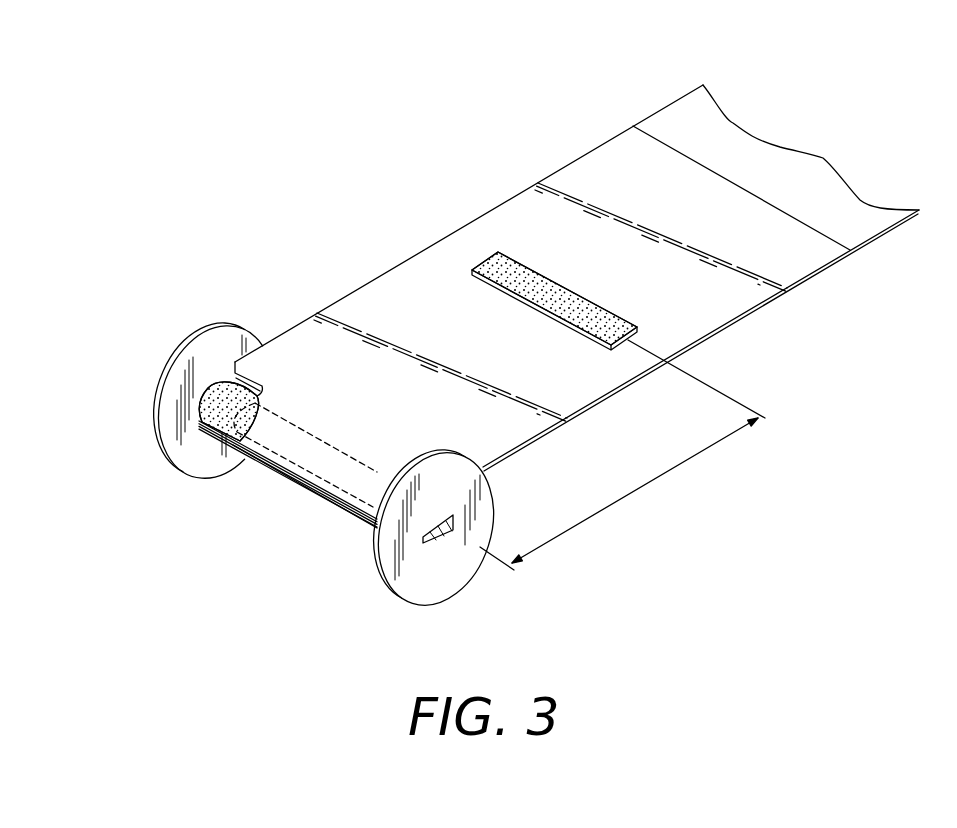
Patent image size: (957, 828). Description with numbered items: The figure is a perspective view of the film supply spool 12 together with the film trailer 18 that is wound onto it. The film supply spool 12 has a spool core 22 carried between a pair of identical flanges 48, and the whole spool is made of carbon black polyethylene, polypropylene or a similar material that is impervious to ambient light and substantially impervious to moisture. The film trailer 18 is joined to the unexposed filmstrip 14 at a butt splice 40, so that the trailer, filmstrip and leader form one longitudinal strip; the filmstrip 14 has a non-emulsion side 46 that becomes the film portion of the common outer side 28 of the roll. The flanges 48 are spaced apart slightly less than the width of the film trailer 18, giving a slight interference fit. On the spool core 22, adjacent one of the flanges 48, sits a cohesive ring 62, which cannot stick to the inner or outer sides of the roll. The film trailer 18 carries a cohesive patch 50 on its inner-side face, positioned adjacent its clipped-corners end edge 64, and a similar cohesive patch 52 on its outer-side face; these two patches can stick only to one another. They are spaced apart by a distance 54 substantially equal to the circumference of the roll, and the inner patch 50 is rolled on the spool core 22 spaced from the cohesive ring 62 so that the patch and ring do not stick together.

The film supply spool 12 is at (335, 488).
The unexposed filmstrip 14 is at (678, 97).
The film trailer 18 is at (577, 265).
The spool core 22 is at (348, 512).
The outer side of the roll 28 is at (580, 178).
The butt splice 40 is at (656, 139).
The non-emulsion side 46 is at (808, 173).
The flanges 48 is at (188, 473).
The cohesive patch 50 is at (271, 451).
The cohesive patch 52 is at (498, 252).
The distance 54 is at (626, 496).
The cohesive ring 62 is at (228, 395).
The clipped-corners end edge 64 is at (310, 478).